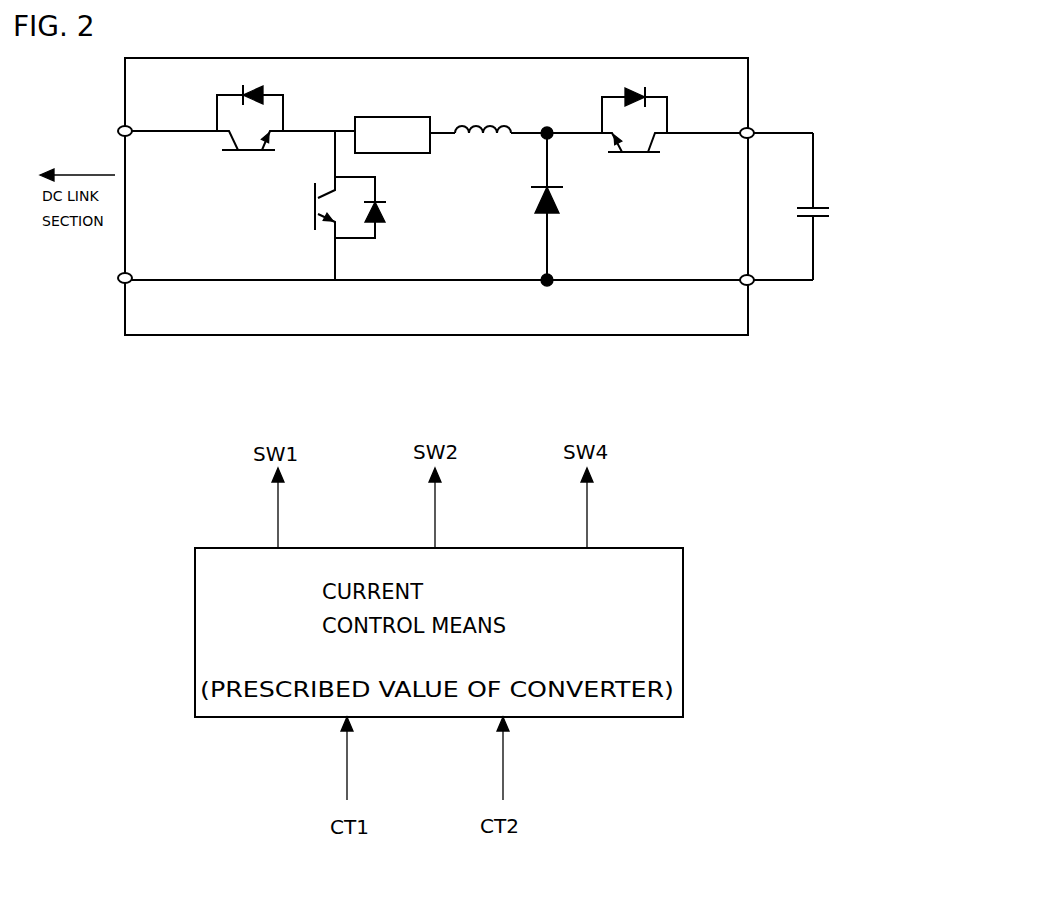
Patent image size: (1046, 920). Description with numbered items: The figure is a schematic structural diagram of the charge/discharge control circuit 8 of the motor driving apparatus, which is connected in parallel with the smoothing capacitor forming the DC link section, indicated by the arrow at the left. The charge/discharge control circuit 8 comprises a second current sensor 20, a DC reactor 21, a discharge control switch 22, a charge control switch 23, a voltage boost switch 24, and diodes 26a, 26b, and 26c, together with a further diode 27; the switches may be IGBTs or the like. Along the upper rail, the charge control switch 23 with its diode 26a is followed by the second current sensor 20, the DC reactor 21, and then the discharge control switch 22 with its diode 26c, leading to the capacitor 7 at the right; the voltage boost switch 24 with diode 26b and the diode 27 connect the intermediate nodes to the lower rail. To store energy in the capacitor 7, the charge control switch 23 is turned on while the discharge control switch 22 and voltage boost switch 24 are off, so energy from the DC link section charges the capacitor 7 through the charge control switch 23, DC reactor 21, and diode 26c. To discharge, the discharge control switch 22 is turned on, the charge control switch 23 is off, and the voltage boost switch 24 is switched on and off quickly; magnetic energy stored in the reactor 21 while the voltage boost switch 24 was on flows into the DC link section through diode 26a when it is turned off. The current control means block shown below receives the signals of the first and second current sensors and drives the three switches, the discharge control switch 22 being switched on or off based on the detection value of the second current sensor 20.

The capacitor 7 is at (840, 184).
The charge/discharge control circuit 8 is at (703, 316).
The second current sensor 20 is at (343, 109).
The DC reactor 21 is at (454, 106).
The discharge control switch 22 is at (679, 168).
The charge control switch 23 is at (215, 151).
The voltage boost switch 24 is at (301, 228).
The diode 26a is at (225, 84).
The diode 26b is at (398, 227).
The diode 26c is at (663, 86).
The diode 27 is at (579, 206).